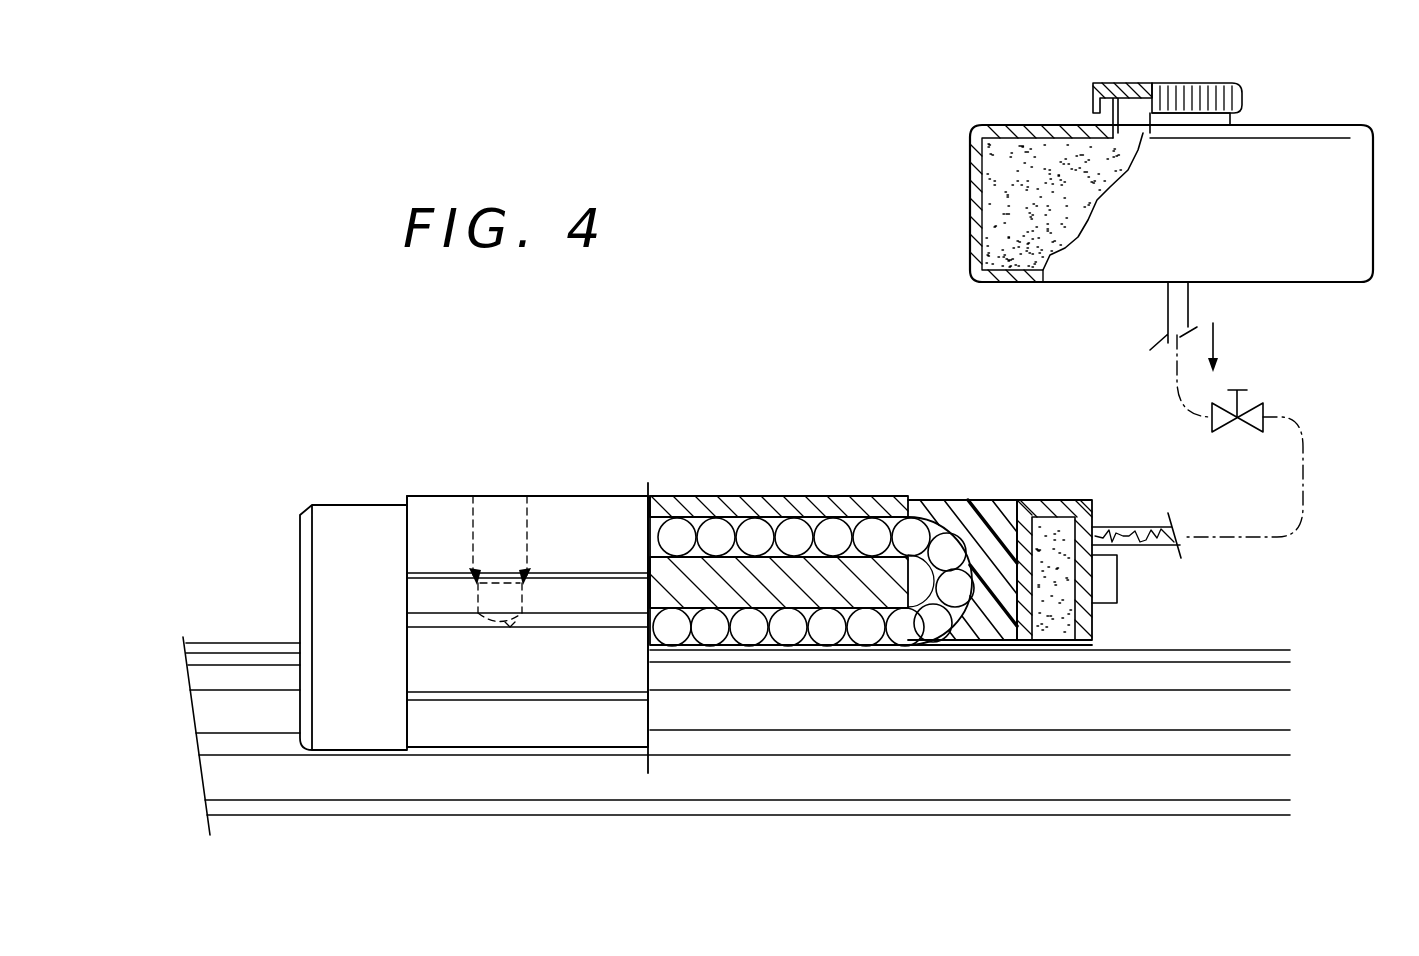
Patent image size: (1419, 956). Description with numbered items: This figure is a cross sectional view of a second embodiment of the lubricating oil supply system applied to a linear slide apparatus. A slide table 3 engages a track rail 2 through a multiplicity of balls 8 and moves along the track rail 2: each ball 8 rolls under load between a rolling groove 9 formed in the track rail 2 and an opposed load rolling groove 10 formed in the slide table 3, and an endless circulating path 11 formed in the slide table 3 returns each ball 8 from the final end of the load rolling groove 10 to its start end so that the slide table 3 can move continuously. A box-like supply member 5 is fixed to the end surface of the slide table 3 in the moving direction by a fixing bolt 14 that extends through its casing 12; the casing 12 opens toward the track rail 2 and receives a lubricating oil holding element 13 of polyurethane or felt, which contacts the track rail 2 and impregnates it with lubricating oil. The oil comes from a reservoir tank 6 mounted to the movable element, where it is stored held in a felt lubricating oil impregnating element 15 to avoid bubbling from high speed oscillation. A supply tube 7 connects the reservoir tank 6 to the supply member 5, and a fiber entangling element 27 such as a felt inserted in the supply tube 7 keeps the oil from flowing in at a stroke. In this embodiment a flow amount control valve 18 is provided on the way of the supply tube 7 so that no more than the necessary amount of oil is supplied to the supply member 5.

The track rail 2 is at (583, 782).
The slide table 3 is at (586, 490).
The supply member 5 is at (1063, 486).
The reservoir tank 6 is at (970, 203).
The supply tube 7 is at (1122, 527).
The ball 8 is at (798, 533).
The rolling groove 9 is at (812, 645).
The load rolling groove 10 is at (690, 547).
The endless circulating path 11 is at (735, 527).
The casing 12 is at (1082, 500).
The lubricating oil holding element 13 is at (1063, 622).
The fixing bolt 14 is at (1103, 582).
The lubricating oil impregnating element 15 is at (1032, 160).
The flow amount control valve 18 is at (1277, 394).
The fiber entangling element 27 is at (1153, 527).